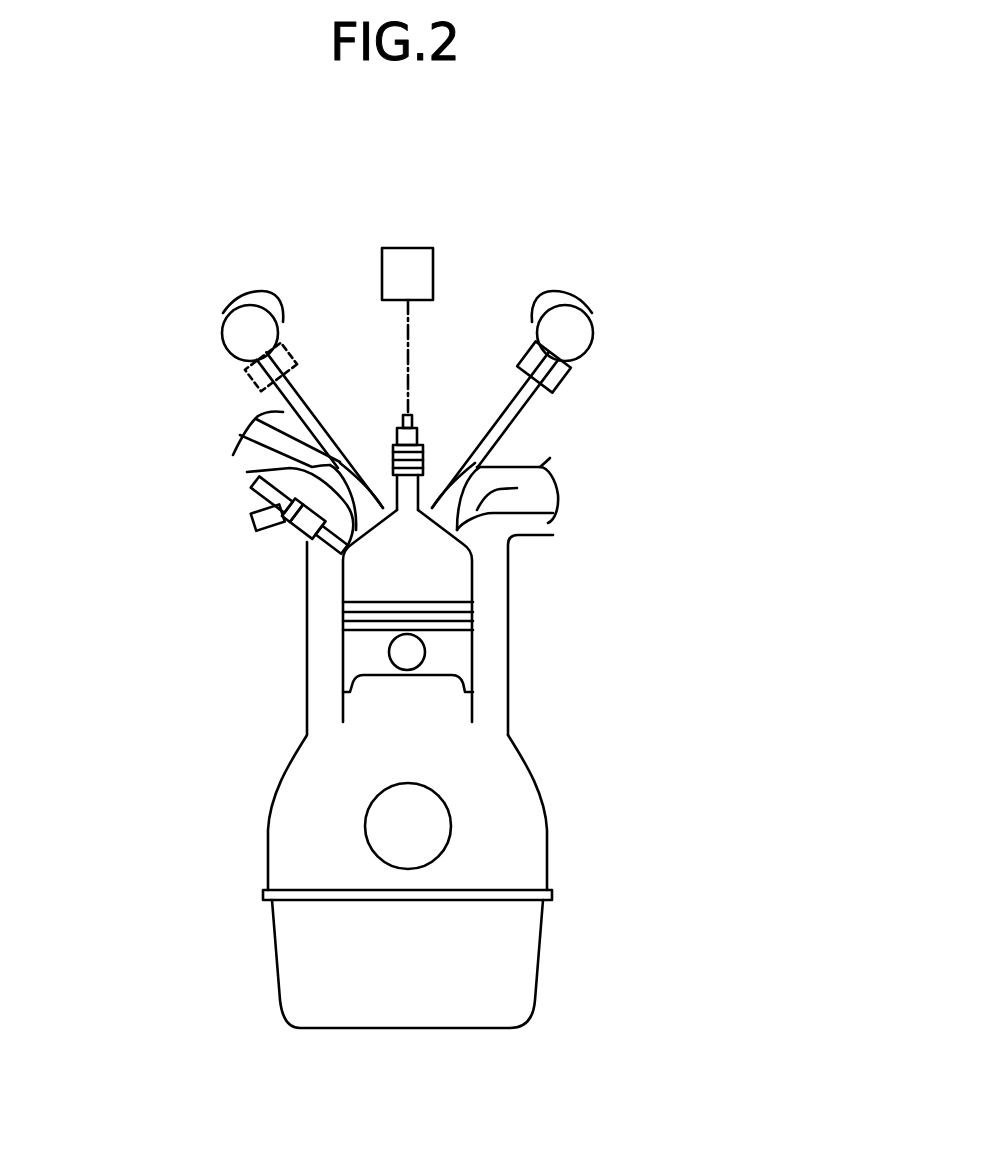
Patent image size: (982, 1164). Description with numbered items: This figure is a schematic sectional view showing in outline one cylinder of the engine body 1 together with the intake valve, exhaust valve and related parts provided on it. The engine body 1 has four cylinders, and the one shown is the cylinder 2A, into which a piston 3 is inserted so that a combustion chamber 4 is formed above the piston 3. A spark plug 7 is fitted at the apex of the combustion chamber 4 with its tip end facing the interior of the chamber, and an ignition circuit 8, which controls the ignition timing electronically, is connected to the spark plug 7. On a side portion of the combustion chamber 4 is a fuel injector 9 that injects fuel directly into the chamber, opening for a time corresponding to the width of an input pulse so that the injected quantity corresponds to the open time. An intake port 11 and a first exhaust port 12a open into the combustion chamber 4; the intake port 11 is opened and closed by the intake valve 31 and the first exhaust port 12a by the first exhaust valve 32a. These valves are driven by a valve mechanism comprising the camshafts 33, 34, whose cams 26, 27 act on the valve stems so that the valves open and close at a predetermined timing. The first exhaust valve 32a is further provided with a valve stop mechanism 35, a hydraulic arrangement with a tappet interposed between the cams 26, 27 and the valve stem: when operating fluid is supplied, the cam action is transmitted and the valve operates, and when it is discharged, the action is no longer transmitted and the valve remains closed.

The engine body 1 is at (273, 682).
The cylinder 2A is at (473, 560).
The piston 3 is at (460, 650).
The combustion chamber 4 is at (453, 585).
The spark plug 7 is at (397, 437).
The ignition circuit 8 is at (408, 247).
The fuel injector 9 is at (299, 538).
The intake port 11 is at (247, 471).
The first exhaust port 12a is at (517, 488).
The cam 26 is at (273, 303).
The cam 27 is at (545, 297).
The intake valve 31 is at (248, 433).
The first exhaust valve 32a is at (503, 423).
The camshaft 33 is at (232, 314).
The camshaft 34 is at (593, 322).
The valve stop mechanism 35 is at (250, 383).